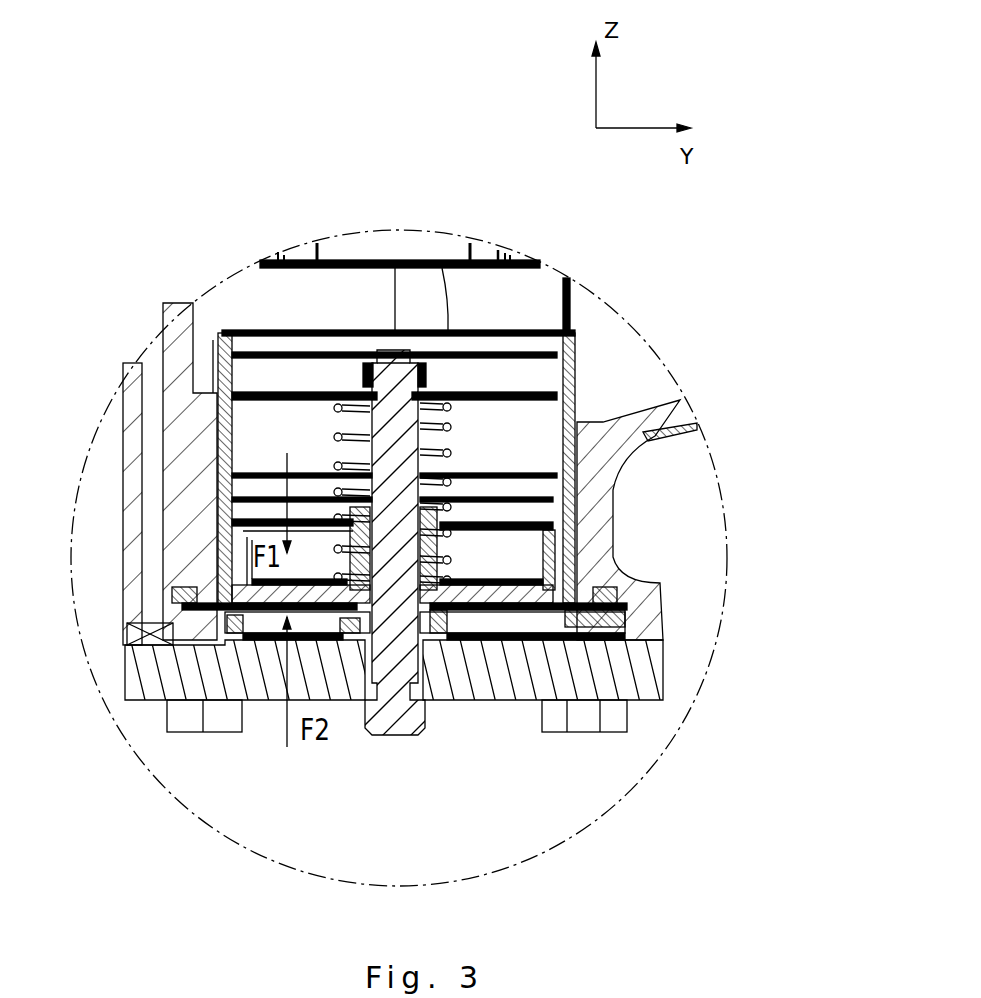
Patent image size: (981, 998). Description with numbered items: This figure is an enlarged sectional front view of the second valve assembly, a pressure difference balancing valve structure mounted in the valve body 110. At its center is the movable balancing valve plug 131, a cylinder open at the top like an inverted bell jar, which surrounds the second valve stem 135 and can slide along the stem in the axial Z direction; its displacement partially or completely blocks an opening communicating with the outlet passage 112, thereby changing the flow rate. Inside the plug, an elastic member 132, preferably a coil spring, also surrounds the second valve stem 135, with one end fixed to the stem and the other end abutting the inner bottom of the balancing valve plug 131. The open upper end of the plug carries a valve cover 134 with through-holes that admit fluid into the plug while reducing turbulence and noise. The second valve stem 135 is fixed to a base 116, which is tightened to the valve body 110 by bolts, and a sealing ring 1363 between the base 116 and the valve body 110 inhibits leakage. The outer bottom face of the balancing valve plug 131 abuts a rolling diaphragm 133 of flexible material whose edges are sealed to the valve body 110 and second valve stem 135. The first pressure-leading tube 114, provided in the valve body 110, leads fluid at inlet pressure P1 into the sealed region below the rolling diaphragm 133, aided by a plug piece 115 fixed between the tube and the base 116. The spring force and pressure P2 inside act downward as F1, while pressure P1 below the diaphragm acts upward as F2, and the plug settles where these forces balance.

The valve body 110 is at (640, 430).
The outlet passage 112 is at (652, 340).
The first pressure-leading tube 114 is at (155, 366).
The plug piece 115 is at (153, 637).
The base 116 is at (487, 688).
The balancing valve plug 131 is at (576, 345).
The elastic member 132 is at (455, 427).
The rolling diaphragm 133 is at (614, 528).
The valve cover 134 is at (545, 343).
The second valve stem 135 is at (400, 722).
The sealing ring 1363 is at (613, 636).